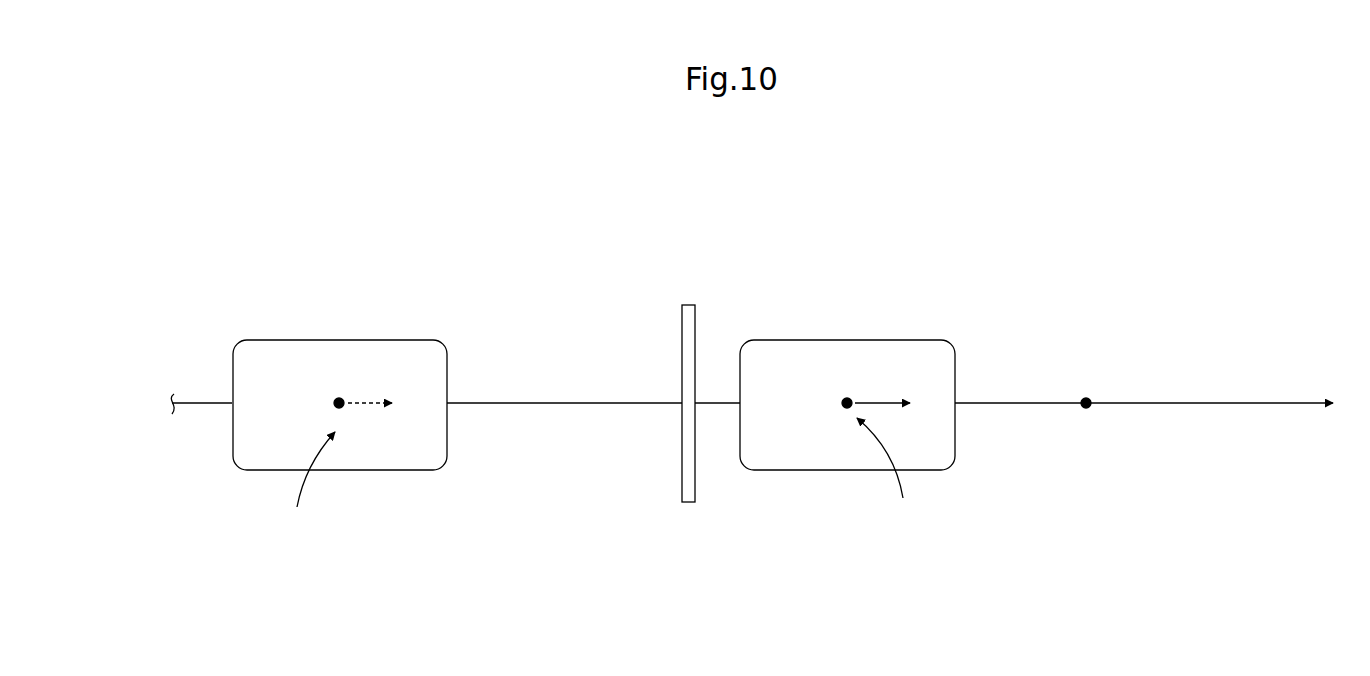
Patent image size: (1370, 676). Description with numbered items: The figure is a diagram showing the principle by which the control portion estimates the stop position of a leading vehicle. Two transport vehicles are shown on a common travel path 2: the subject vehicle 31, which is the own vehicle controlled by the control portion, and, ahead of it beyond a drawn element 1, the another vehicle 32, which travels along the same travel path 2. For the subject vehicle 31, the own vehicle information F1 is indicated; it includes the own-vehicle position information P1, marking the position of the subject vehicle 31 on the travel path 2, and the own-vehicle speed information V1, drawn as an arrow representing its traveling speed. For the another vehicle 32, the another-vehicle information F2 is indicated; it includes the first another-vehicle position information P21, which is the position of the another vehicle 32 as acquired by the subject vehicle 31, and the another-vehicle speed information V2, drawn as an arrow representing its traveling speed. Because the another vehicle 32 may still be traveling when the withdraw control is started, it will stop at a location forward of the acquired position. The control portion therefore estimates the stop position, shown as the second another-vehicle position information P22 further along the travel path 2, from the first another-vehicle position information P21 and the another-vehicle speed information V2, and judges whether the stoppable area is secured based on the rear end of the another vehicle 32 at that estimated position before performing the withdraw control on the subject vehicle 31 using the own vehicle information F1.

The wall / partition 1 is at (682, 480).
The travel path 2 is at (1212, 400).
The subject vehicle 31 is at (337, 340).
The another vehicle 32 is at (902, 338).
The own-vehicle position information P1 is at (345, 408).
The own-vehicle speed information V1 is at (370, 391).
The own vehicle information F1 is at (309, 485).
The first another-vehicle position information P21 is at (840, 405).
The another-vehicle speed information V2 is at (882, 391).
The another-vehicle information F2 is at (886, 473).
The second another-vehicle position information P22 is at (1088, 408).